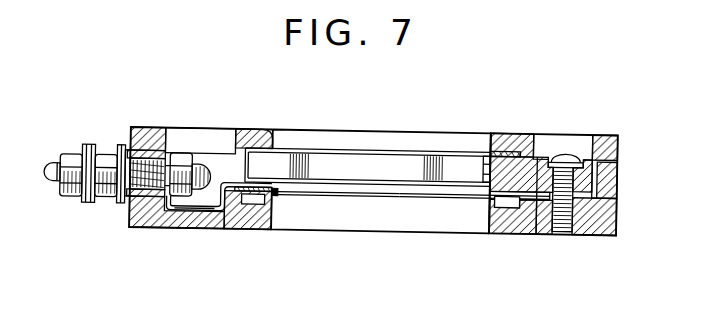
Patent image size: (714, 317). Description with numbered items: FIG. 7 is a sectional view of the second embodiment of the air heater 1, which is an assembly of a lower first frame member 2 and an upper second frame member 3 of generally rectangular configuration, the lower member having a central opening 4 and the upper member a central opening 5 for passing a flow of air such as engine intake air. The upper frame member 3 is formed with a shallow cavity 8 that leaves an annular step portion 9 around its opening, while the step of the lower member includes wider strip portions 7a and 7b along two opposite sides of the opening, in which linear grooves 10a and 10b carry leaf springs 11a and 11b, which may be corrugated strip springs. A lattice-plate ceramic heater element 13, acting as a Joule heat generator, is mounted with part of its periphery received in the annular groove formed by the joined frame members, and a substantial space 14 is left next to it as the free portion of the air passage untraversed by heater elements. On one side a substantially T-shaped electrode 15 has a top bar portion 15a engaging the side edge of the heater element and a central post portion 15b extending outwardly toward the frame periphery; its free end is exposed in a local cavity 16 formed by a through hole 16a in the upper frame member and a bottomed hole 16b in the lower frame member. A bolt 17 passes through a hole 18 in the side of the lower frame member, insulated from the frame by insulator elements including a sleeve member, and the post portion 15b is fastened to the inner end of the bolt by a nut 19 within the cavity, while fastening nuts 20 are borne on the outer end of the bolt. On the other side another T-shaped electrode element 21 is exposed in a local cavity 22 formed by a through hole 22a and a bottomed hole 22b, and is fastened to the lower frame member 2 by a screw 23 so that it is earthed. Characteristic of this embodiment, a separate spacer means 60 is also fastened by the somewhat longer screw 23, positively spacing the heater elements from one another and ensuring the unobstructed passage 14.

The air heater 1 is at (622, 171).
The first frame member 2 is at (608, 223).
The second frame member 3 is at (512, 140).
The central opening 4 is at (492, 218).
The central opening 5 is at (487, 142).
The wider strip portion 7a is at (280, 194).
The wider strip portion 7b is at (503, 182).
The shallow cavity 8 is at (518, 152).
The annular step portion 9 is at (486, 170).
The linear groove 10a is at (248, 202).
The linear groove 10b is at (527, 228).
The leaf spring 11a is at (271, 227).
The leaf spring 11b is at (510, 204).
The heater element 13 is at (403, 152).
The space 14 is at (330, 163).
The electrode 15 is at (201, 212).
The top bar portion of electrode 15a is at (270, 175).
The central post portion of electrode 15b is at (187, 208).
The local cavity 16 is at (205, 138).
The through hole 16a is at (228, 140).
The bottomed hole 16b is at (225, 210).
The bolt 17 is at (52, 166).
The hole 18 is at (130, 203).
The nut 19 is at (185, 160).
The fastening nuts 20 is at (105, 162).
The electrode element 21 is at (538, 218).
The local cavity 22 is at (573, 144).
The through hole 22a is at (590, 136).
The bottomed hole 22b is at (617, 194).
The screw 23 is at (580, 150).
The spacer means 60 is at (535, 165).